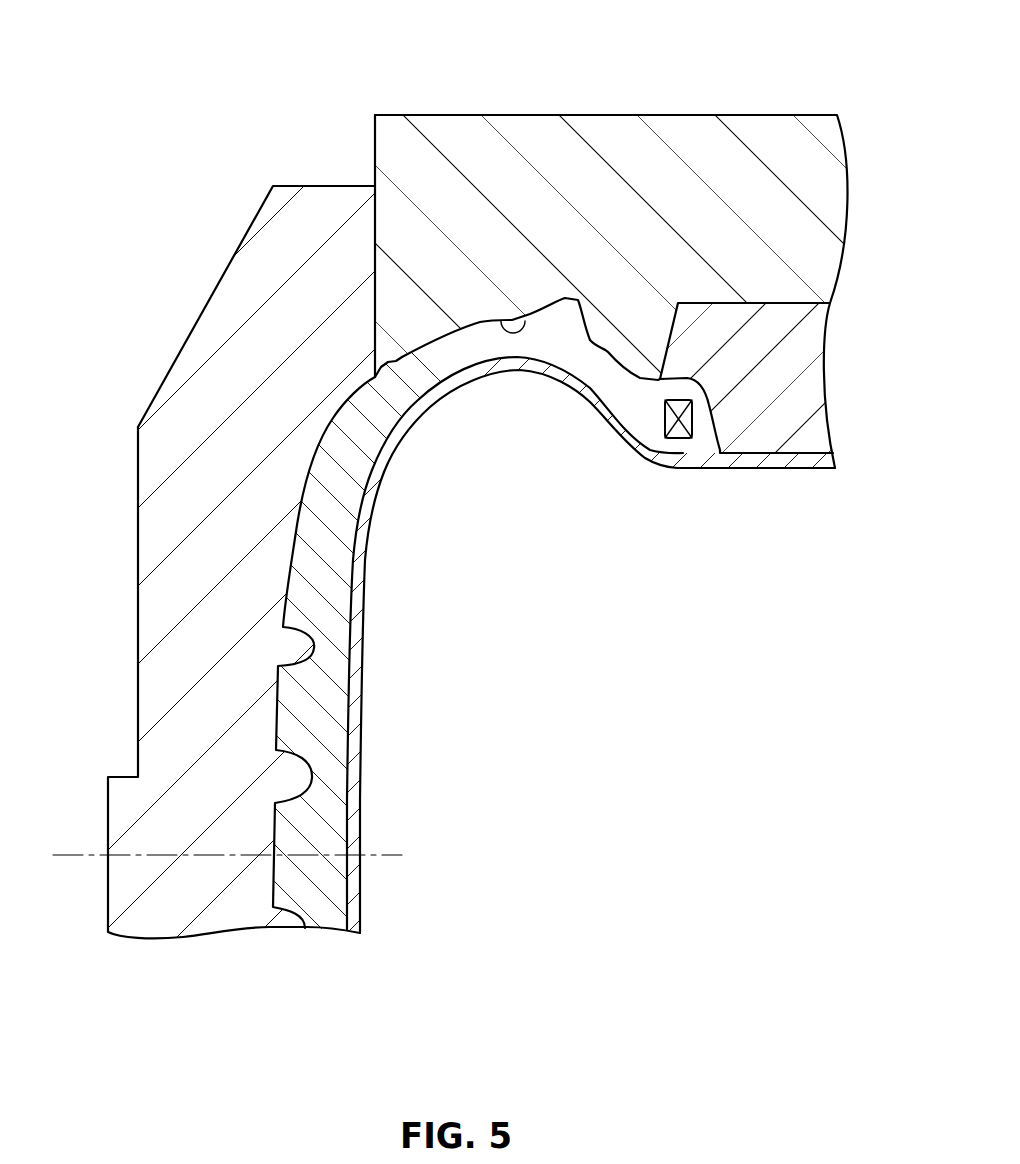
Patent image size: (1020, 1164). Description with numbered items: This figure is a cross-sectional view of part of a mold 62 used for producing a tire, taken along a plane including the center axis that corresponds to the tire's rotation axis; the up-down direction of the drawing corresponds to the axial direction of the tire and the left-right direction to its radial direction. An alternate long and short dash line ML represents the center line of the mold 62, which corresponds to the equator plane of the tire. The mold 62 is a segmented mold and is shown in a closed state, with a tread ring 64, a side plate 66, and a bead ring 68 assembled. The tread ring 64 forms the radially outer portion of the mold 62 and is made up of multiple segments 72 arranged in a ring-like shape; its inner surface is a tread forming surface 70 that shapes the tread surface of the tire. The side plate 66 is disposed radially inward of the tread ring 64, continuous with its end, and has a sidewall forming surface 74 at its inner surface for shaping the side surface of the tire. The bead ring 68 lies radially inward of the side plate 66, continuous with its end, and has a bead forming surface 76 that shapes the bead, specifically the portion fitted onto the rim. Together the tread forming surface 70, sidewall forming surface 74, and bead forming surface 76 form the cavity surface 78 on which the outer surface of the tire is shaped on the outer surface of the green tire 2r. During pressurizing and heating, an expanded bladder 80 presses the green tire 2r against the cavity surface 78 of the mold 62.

The mold 62 is at (808, 79).
The tread ring 64 is at (184, 378).
The side plate 66 is at (608, 147).
The bead ring 68 is at (787, 372).
The tread forming surface 70 is at (287, 585).
The segment 72 is at (253, 268).
The sidewall forming surface 74 is at (523, 322).
The bead forming surface 76 is at (713, 437).
The cavity surface 78 is at (310, 484).
The expanded bladder 80 is at (357, 727).
The green tire 2r is at (287, 697).
The center line ML is at (72, 858).